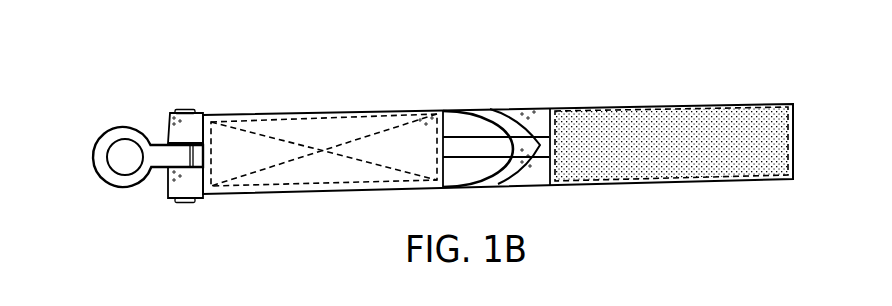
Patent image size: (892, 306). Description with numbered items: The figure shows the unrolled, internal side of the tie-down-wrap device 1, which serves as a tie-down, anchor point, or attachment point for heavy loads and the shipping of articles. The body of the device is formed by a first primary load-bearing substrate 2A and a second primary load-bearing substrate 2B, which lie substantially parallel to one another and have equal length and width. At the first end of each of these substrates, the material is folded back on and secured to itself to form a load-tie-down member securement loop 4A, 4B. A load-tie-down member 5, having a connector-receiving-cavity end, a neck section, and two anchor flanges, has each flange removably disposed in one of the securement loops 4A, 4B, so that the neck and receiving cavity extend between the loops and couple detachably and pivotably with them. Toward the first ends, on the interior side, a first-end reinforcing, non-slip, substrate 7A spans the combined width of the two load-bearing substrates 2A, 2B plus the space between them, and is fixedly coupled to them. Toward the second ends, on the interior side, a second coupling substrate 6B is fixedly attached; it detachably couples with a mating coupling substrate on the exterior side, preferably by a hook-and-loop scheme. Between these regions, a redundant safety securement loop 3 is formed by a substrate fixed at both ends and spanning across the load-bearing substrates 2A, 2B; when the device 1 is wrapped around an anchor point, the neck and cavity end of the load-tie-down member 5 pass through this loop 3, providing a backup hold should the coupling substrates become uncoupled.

The tie-down-wrap device 1 is at (247, 71).
The first primary load-bearing substrate 2A is at (538, 106).
The second primary load-bearing substrate 2B is at (533, 191).
The redundant safety securement loop 3 is at (520, 137).
The load-tie-down member securement loop 4A is at (165, 111).
The load-tie-down member securement loop 4B is at (161, 191).
The load-tie-down member 5 is at (92, 133).
The second coupling substrate 6B is at (660, 189).
The first-end reinforcing, non-slip, substrate 7A is at (324, 111).